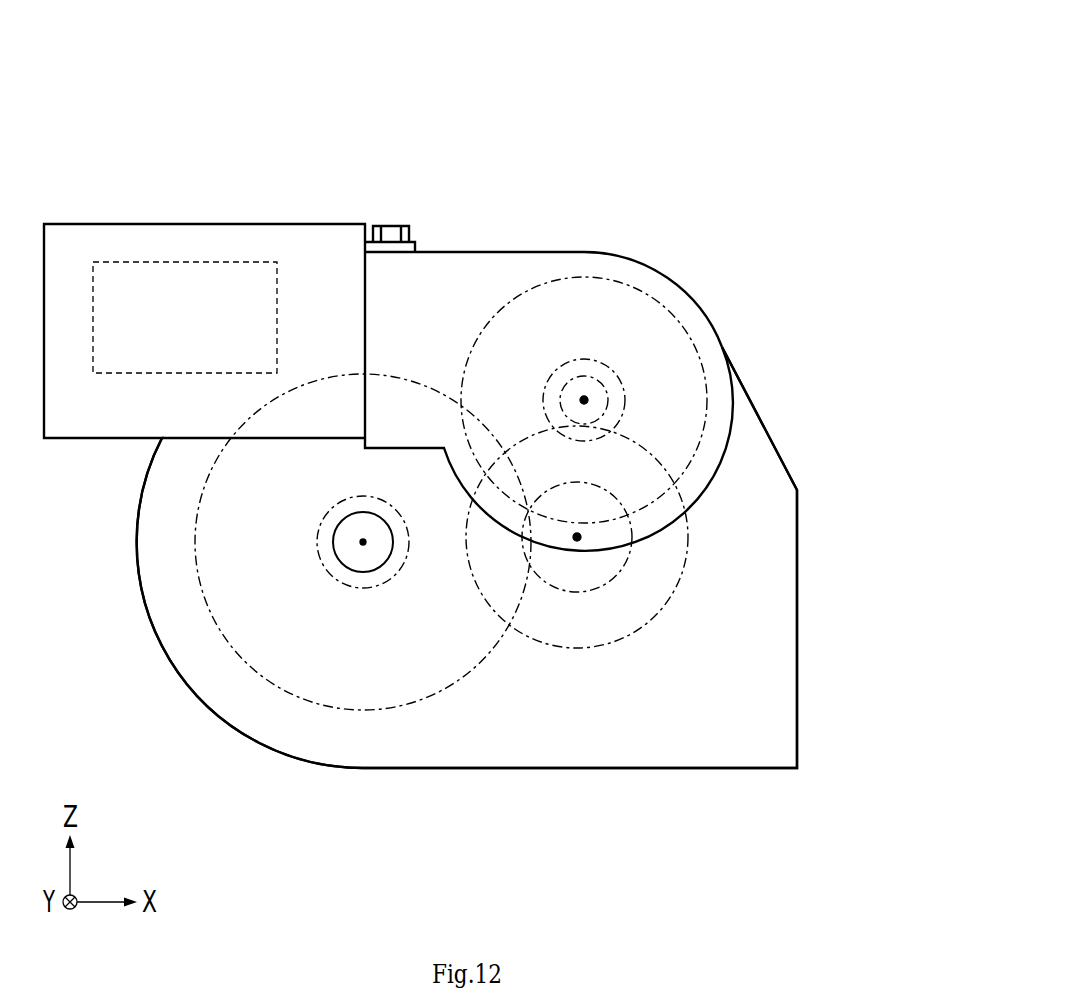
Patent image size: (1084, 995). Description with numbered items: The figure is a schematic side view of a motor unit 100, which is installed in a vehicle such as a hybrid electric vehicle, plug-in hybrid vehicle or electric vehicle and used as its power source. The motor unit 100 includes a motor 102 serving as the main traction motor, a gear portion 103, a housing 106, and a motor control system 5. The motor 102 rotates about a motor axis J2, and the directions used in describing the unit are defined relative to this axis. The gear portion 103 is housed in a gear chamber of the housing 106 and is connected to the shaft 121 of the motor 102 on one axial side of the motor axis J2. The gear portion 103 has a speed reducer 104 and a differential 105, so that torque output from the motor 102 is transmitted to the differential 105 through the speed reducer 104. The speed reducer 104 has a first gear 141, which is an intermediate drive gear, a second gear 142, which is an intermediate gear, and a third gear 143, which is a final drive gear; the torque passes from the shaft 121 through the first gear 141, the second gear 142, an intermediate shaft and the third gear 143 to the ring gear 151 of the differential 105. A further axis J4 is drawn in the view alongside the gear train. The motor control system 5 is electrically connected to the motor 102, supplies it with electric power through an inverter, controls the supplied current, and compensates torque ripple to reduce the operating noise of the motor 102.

The motor unit 100 is at (703, 108).
The motor control system 5 is at (136, 263).
The housing 106 is at (511, 252).
The motor 102 is at (593, 277).
The motor axis J2 is at (587, 397).
The first gear 141 is at (623, 377).
The shaft 121 is at (610, 400).
The speed reducer 104 is at (688, 540).
The second gear 142 is at (687, 573).
The third gear 143 is at (625, 572).
The fourth joint axis J4 is at (577, 537).
The gear portion 103 is at (518, 690).
The differential 105 is at (327, 568).
The ring gear 151 is at (260, 677).